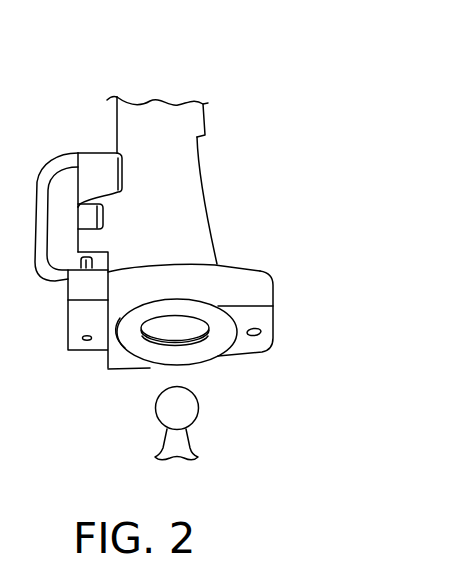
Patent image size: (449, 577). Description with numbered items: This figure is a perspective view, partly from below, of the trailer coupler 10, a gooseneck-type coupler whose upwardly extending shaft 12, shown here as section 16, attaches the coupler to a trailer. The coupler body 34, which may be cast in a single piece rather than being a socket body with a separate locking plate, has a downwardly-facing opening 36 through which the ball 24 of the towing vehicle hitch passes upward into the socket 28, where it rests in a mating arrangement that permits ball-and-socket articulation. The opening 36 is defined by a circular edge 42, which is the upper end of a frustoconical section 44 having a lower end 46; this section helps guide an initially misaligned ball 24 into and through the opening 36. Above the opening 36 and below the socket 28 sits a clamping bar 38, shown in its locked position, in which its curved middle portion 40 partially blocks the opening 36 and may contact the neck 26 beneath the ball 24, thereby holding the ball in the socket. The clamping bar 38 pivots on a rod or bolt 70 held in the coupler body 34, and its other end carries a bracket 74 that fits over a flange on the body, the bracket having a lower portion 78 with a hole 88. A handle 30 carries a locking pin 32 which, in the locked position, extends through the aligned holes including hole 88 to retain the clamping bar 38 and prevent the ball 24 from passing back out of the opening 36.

The trailer coupler 10 is at (94, 92).
The shaft 12 is at (205, 121).
The section 16 is at (197, 169).
The ball 24 is at (194, 412).
The neck 26 is at (176, 442).
The socket 28 is at (190, 331).
The handle 30 is at (57, 163).
The locking pin 32 is at (82, 271).
The coupler body 34 is at (255, 288).
The opening 36 is at (151, 377).
The clamping bar 38 is at (165, 357).
The curved middle portion 40 is at (177, 348).
The circular edge 42 is at (180, 316).
The frustoconical section 44 is at (214, 318).
The lower end 46 is at (121, 320).
The rod or bolt 70 is at (262, 337).
The bracket 74 is at (68, 313).
The lower portion 78 is at (78, 339).
The hole 88 is at (85, 350).